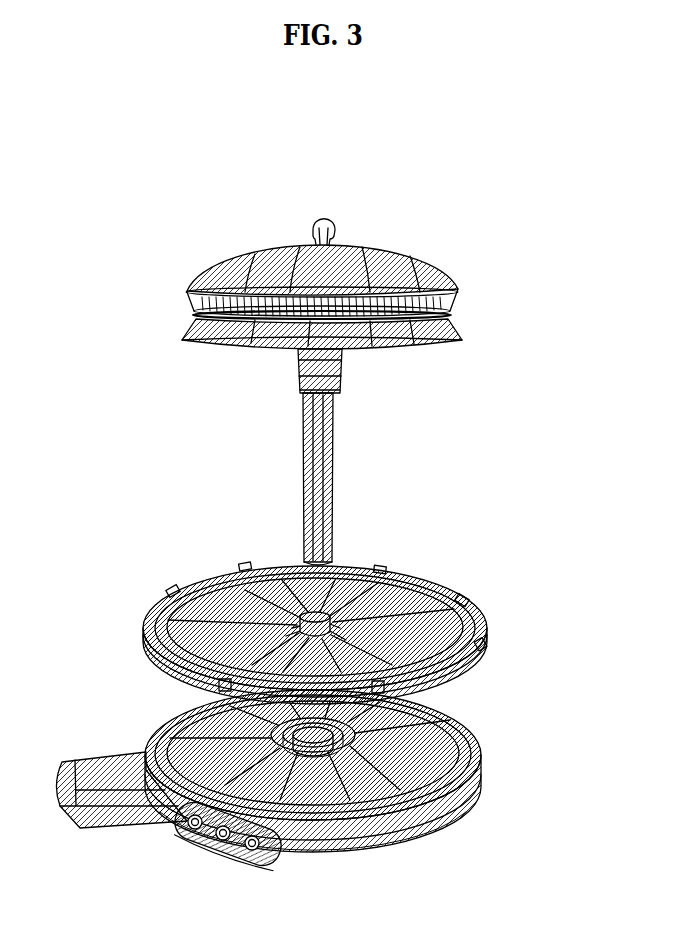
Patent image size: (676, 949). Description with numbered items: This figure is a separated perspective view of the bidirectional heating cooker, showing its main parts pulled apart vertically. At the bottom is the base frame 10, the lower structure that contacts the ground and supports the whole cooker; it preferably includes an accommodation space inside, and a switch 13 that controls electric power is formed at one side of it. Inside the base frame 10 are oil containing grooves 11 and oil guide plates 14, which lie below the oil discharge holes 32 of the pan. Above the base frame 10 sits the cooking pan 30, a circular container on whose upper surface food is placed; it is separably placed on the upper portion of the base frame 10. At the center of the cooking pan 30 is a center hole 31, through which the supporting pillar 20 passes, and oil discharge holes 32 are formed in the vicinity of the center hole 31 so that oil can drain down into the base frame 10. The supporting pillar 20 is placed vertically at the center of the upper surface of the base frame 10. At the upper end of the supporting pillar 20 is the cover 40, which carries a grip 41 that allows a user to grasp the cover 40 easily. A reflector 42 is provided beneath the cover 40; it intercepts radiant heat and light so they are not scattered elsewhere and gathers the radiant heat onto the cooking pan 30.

The base frame 10 is at (263, 795).
The oil containing grooves 11 is at (80, 830).
The switch 13 is at (258, 860).
The oil guide plates 14 is at (160, 703).
The supporting pillar 20 is at (333, 443).
The cooking pan 30 is at (331, 618).
The center hole 31 is at (396, 573).
The oil discharge holes 32 is at (240, 566).
The cover 40 is at (357, 255).
The grip 41 is at (322, 217).
The reflector 42 is at (446, 305).